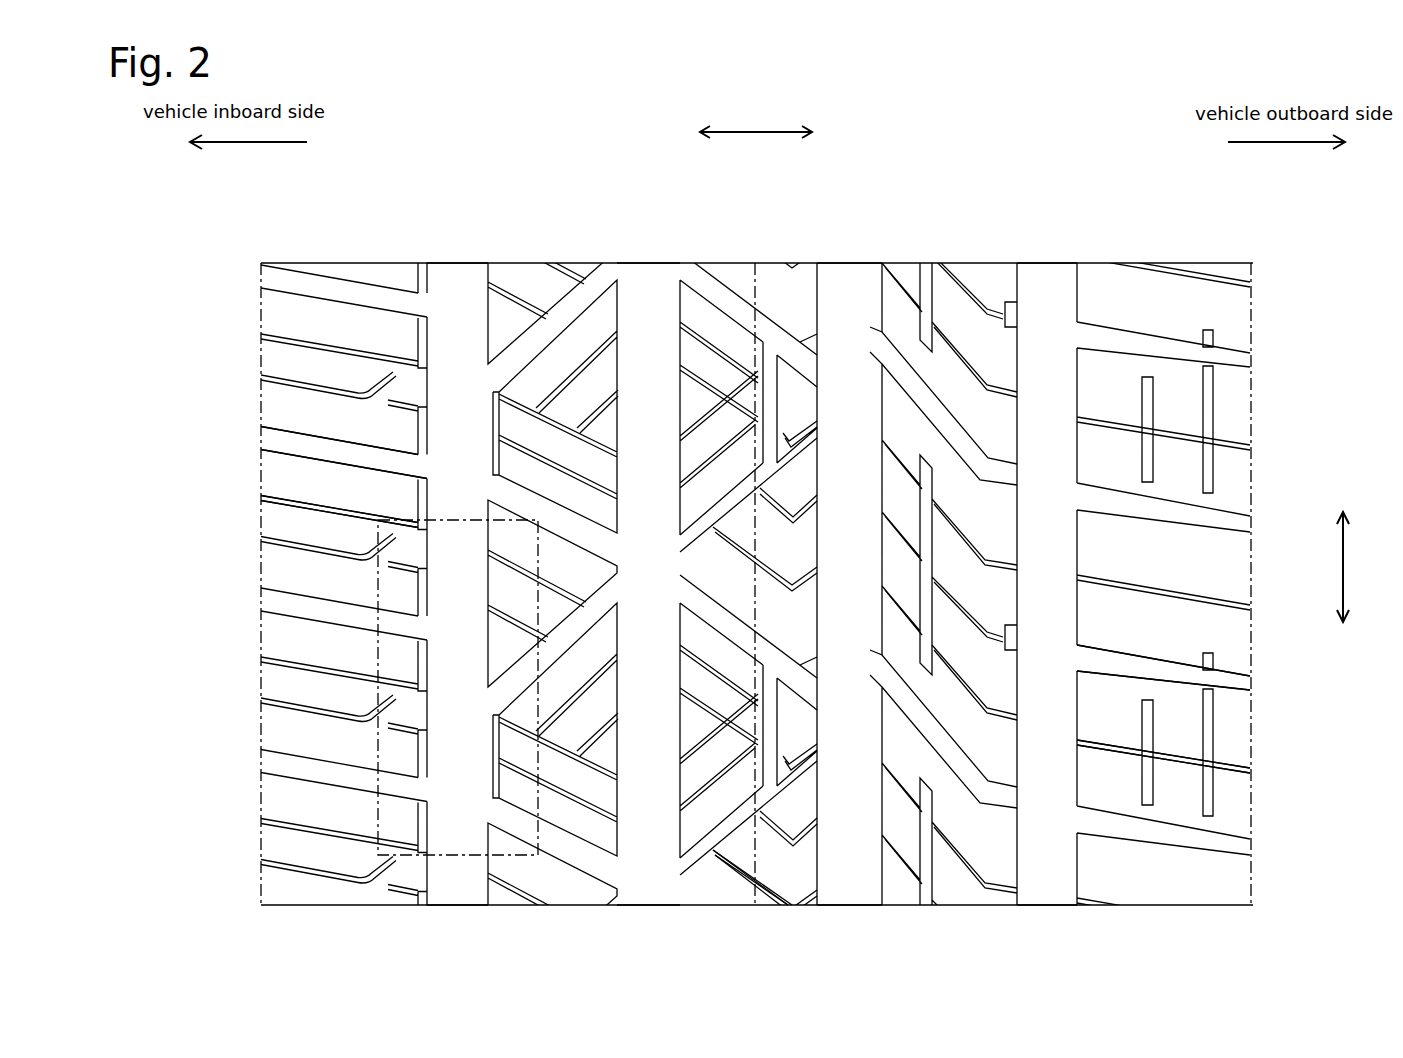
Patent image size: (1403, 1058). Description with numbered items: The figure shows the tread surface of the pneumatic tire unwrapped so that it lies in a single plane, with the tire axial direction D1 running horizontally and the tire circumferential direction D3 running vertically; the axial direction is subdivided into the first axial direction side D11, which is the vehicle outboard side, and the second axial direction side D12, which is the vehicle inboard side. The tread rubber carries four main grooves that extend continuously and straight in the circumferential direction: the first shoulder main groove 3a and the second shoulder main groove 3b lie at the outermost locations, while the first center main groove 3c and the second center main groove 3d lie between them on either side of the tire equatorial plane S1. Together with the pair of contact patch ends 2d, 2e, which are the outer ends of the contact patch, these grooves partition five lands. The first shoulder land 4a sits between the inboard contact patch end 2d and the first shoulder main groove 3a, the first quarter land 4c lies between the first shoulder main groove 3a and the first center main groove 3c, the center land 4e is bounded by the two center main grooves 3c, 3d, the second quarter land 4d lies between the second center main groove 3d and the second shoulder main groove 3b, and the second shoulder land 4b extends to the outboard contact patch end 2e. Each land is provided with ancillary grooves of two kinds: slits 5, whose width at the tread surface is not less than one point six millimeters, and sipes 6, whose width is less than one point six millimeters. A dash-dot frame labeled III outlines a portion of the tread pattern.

The contact patch end 2d is at (262, 322).
The contact patch end 2e is at (1254, 322).
The first shoulder main groove 3a is at (459, 290).
The second shoulder main groove 3b is at (1043, 290).
The first center main groove 3c is at (648, 290).
The second center main groove 3d is at (843, 290).
The first shoulder land 4a is at (427, 240).
The second shoulder land 4b is at (1250, 240).
The first quarter land 4c is at (617, 240).
The second quarter land 4d is at (1017, 240).
The center land 4e is at (817, 240).
The slit 5 is at (318, 422).
The sipe 6 is at (316, 489).
The tire equatorial plane S1 is at (760, 852).
The enlarged region of FIG. 3 III is at (458, 857).
The tire axial direction D1 is at (756, 123).
The tire circumferential direction D3 is at (1358, 567).
The first axial direction side D11 is at (1309, 143).
The second axial direction side D12 is at (227, 143).